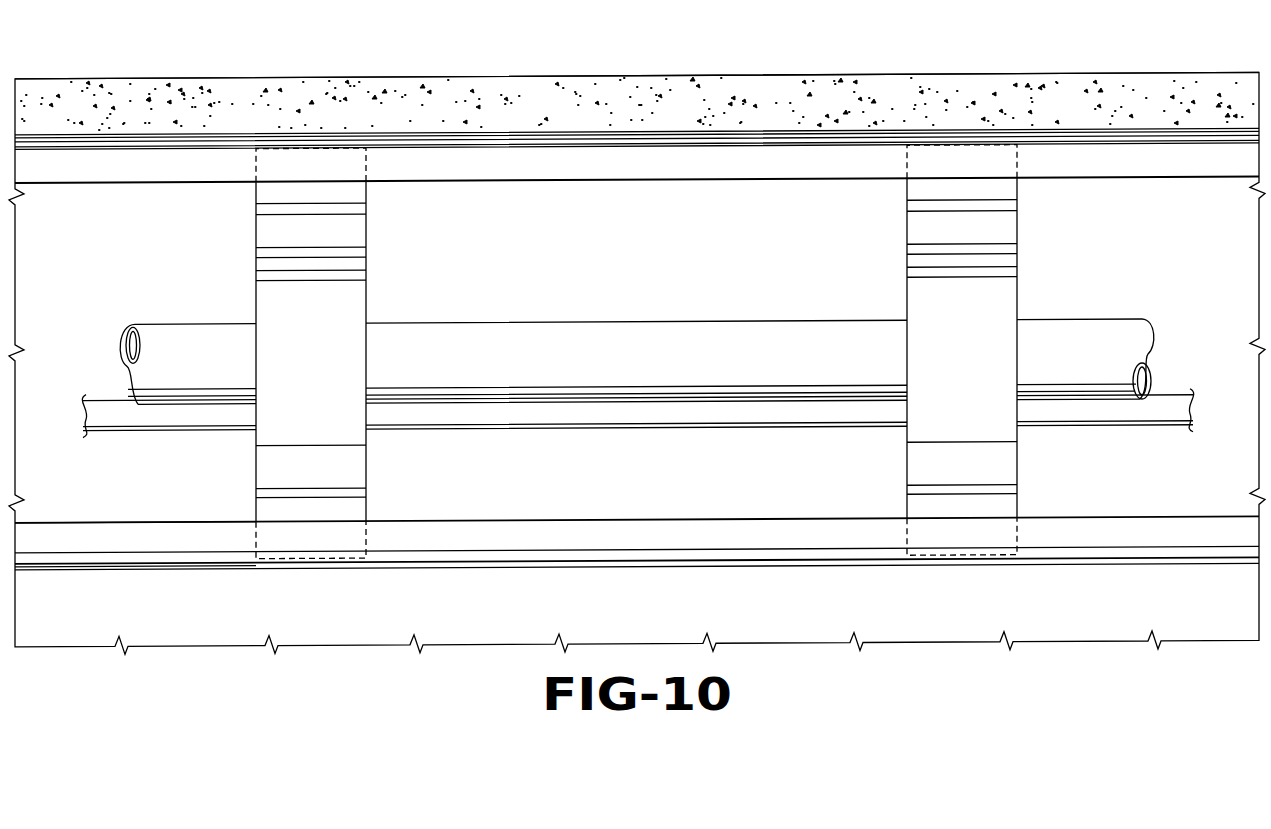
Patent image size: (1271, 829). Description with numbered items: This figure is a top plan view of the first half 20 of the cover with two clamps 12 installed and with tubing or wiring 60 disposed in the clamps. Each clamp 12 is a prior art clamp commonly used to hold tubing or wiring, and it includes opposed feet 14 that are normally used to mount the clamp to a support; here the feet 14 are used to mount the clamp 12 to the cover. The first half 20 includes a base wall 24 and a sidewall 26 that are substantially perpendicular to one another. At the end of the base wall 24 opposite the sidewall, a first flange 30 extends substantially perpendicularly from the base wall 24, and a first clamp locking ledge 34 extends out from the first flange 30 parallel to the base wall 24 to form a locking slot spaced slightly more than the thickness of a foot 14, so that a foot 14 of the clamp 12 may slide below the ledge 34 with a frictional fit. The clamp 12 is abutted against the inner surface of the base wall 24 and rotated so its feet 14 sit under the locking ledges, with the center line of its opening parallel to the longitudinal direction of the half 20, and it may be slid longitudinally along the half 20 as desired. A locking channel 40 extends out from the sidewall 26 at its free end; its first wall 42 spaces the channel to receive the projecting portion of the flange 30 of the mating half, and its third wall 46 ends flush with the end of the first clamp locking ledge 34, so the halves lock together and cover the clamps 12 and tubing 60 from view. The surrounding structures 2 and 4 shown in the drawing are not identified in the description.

The building structure 2 is at (1067, 636).
The concrete ceiling slab 4 is at (236, 78).
The clamp 12 is at (255, 290).
The feet 14 is at (358, 193).
The first half 20 is at (136, 570).
The base wall 24 is at (529, 488).
The sidewall 26 is at (459, 568).
The first flange 30 is at (92, 150).
The first clamp locking ledge 34 is at (148, 174).
The locking channel 40 is at (190, 523).
The first wall 42 is at (202, 558).
The third wall 46 is at (131, 532).
The tubing or wiring 60 is at (586, 315).